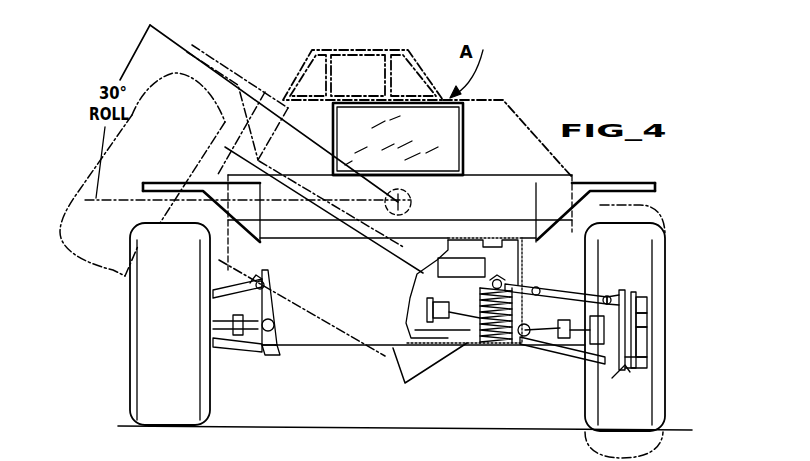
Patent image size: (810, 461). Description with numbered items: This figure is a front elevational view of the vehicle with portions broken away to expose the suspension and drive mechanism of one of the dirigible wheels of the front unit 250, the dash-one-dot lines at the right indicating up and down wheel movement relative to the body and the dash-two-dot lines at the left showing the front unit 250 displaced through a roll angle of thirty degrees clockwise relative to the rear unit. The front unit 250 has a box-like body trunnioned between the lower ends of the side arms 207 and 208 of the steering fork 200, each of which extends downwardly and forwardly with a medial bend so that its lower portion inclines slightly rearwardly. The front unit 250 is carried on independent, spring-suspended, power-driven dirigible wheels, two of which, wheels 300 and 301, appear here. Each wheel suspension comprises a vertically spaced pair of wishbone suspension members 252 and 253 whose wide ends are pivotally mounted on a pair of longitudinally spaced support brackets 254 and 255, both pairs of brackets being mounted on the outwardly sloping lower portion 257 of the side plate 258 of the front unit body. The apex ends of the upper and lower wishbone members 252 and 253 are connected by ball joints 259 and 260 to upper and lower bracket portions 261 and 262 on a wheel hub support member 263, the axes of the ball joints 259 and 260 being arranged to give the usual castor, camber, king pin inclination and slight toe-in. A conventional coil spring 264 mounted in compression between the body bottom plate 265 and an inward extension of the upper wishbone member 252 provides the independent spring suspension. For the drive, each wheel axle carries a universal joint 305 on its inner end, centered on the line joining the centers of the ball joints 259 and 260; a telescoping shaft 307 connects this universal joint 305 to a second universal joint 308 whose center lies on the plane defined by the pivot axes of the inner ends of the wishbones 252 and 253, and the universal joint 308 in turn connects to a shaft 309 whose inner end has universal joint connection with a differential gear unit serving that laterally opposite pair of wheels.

The steering fork 200 is at (497, 190).
The side arm 207 is at (590, 260).
The side arm 208 is at (240, 248).
The front unit 250 is at (392, 378).
The upper wishbone suspension member 252 is at (262, 280).
The lower wishbone suspension member 253 is at (246, 360).
The support bracket 254 is at (272, 300).
The support bracket 255 is at (276, 348).
The lower portion of side plate 257 is at (290, 310).
The side plate 258 is at (526, 236).
The ball joint 259 is at (641, 298).
The ball joint 260 is at (641, 360).
The upper bracket portion 261 is at (641, 313).
The lower bracket portion 262 is at (641, 340).
The wheel hub support member 263 is at (646, 324).
The coil spring 264 is at (462, 291).
The body bottom plate 265 is at (440, 346).
The dirigible wheel 300 is at (666, 252).
The dirigible wheel 301 is at (128, 366).
The universal joint 305 is at (621, 370).
The telescoping shaft 307 is at (265, 350).
The universal joint 308 is at (278, 326).
The shaft 309 is at (502, 305).